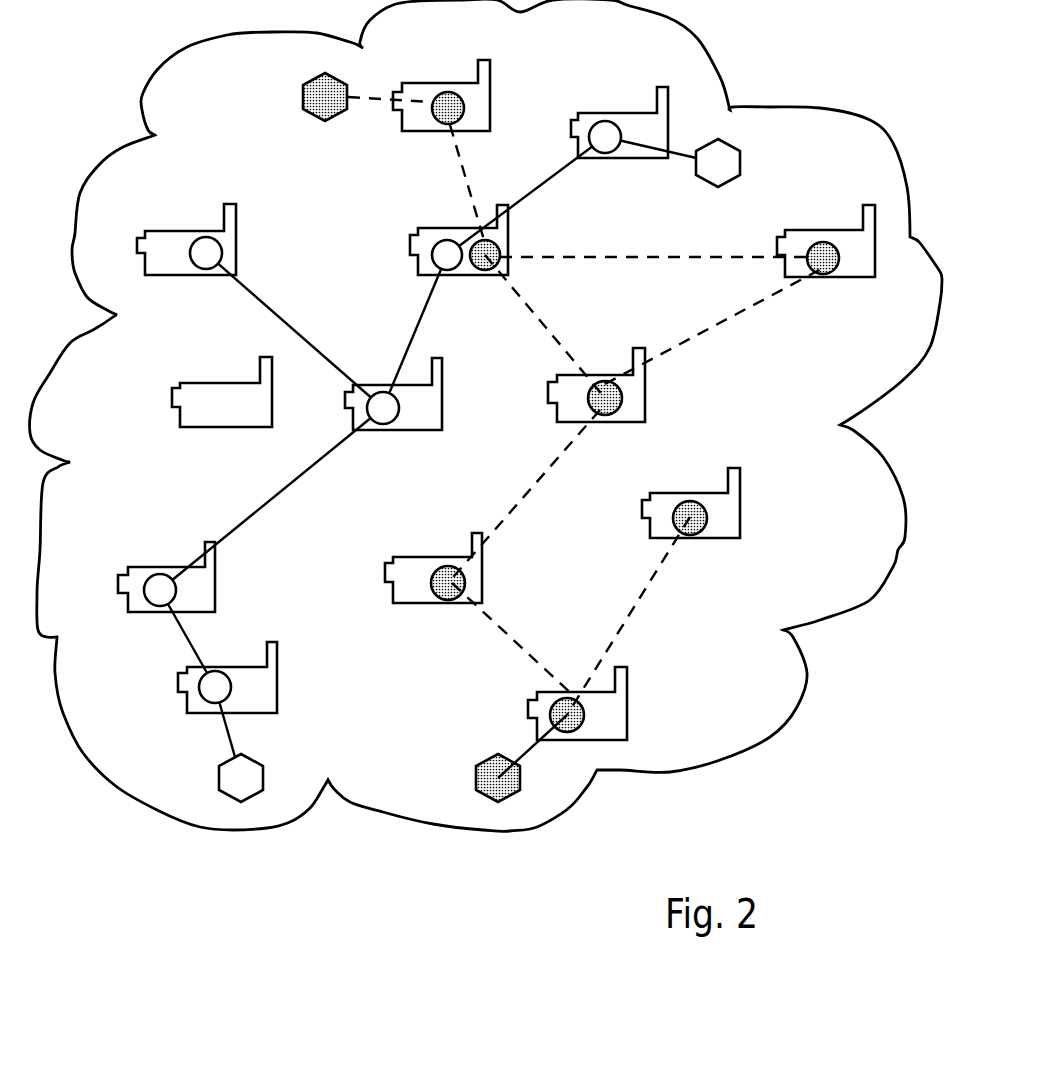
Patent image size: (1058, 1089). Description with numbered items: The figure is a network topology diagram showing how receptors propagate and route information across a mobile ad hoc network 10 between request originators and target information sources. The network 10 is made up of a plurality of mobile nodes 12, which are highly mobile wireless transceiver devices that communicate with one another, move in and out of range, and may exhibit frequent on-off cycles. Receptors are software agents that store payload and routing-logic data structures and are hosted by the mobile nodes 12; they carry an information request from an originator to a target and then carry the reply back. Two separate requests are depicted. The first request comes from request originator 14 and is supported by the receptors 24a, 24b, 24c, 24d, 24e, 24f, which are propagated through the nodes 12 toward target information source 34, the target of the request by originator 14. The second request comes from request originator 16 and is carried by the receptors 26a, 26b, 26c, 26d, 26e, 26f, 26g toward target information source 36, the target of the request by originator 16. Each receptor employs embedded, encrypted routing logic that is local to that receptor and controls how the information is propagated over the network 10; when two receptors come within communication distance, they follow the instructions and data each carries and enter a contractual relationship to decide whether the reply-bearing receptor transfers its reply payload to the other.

The mobile ad hoc network 10 is at (707, 747).
The mobile node 12 is at (490, 118).
The request originator 14 is at (262, 770).
The request originator 16 is at (479, 780).
The receptor 24a is at (233, 667).
The receptor 24b is at (160, 574).
The receptor 24c is at (388, 427).
The receptor 24d is at (220, 250).
The receptor 24e is at (436, 245).
The receptor 24f is at (603, 120).
The receptor 26a is at (528, 713).
The receptor 26b is at (437, 603).
The receptor 26c is at (692, 537).
The receptor 26d is at (600, 414).
The receptor 26e is at (814, 275).
The receptor 26f is at (497, 268).
The receptor 26g is at (445, 92).
The target information source 34 is at (740, 168).
The target information source 36 is at (306, 112).